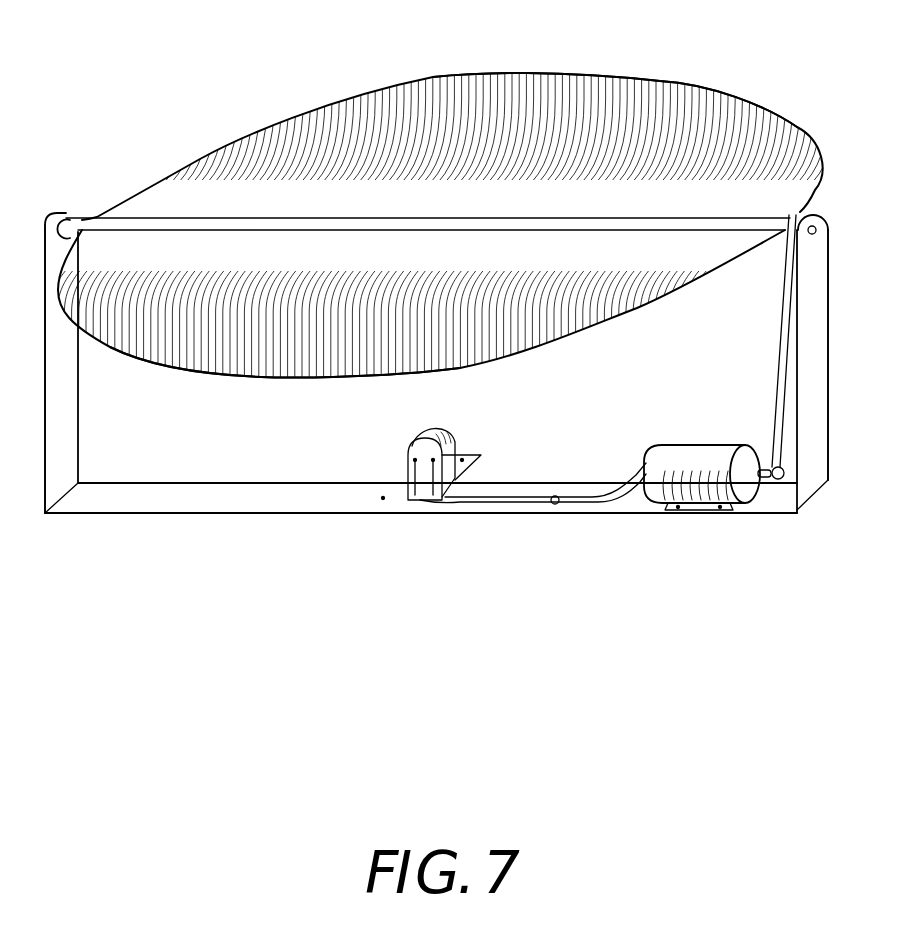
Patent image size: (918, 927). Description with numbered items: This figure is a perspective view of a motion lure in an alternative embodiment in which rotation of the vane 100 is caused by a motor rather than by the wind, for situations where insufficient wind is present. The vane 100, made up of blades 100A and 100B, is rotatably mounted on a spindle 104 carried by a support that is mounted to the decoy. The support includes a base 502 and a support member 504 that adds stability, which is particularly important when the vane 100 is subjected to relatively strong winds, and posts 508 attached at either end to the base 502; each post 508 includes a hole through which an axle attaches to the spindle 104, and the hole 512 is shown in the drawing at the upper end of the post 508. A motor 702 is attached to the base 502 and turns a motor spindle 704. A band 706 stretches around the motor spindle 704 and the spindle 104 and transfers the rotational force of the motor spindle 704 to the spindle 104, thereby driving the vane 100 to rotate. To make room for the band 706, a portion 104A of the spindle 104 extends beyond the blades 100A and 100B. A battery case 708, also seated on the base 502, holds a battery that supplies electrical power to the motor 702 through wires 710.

The vane 100 is at (277, 119).
The blade 100A is at (222, 348).
The blade 100B is at (675, 107).
The spindle 104 is at (87, 215).
The portion of spindle 104A is at (803, 212).
The base 502 is at (320, 500).
The support member 504 is at (478, 456).
The post 508 is at (60, 408).
The pivot hole 512 is at (812, 234).
The motor 702 is at (738, 447).
The motor spindle 704 is at (743, 487).
The band 706 is at (775, 332).
The battery case 708 is at (440, 432).
The wires 710 is at (556, 512).